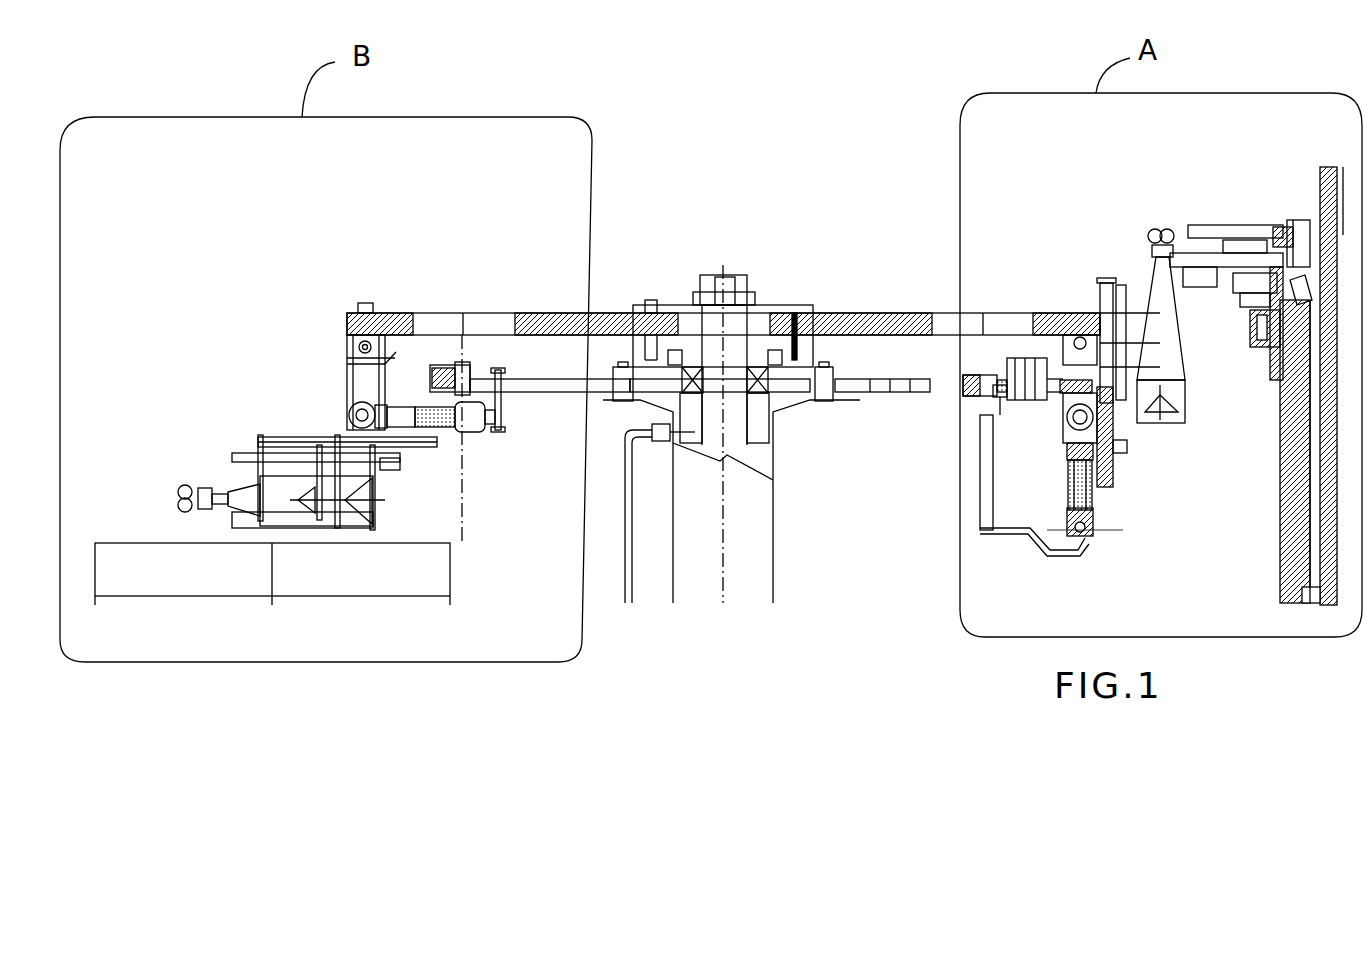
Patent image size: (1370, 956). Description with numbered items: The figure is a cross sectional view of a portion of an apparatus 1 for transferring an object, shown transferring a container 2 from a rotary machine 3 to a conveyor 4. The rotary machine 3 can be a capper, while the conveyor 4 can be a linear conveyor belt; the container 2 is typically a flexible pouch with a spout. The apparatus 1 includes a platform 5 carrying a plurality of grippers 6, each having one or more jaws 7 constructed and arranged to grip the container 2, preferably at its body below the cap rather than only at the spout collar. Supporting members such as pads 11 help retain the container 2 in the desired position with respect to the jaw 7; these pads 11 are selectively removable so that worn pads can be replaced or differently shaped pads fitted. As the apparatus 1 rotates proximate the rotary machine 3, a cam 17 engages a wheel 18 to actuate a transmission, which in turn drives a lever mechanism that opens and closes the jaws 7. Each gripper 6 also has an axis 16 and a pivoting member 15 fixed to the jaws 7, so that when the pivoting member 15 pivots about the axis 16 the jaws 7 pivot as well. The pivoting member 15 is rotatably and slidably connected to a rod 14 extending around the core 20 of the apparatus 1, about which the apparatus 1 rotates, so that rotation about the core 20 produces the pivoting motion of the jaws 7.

The apparatus 1 is at (883, 303).
The container 2 is at (1152, 285).
The rotary machine 3 is at (1265, 214).
The conveyor 4 is at (432, 578).
The platform 5 is at (856, 312).
The gripper 6 is at (1102, 290).
The jaw 7 is at (255, 478).
The pad 11 is at (292, 440).
The rod 14 is at (480, 420).
The pivoting member 15 is at (1096, 512).
The axis 16 is at (355, 410).
The cam 17 is at (1000, 395).
The wheel 18 is at (1010, 365).
The core 20 is at (775, 527).